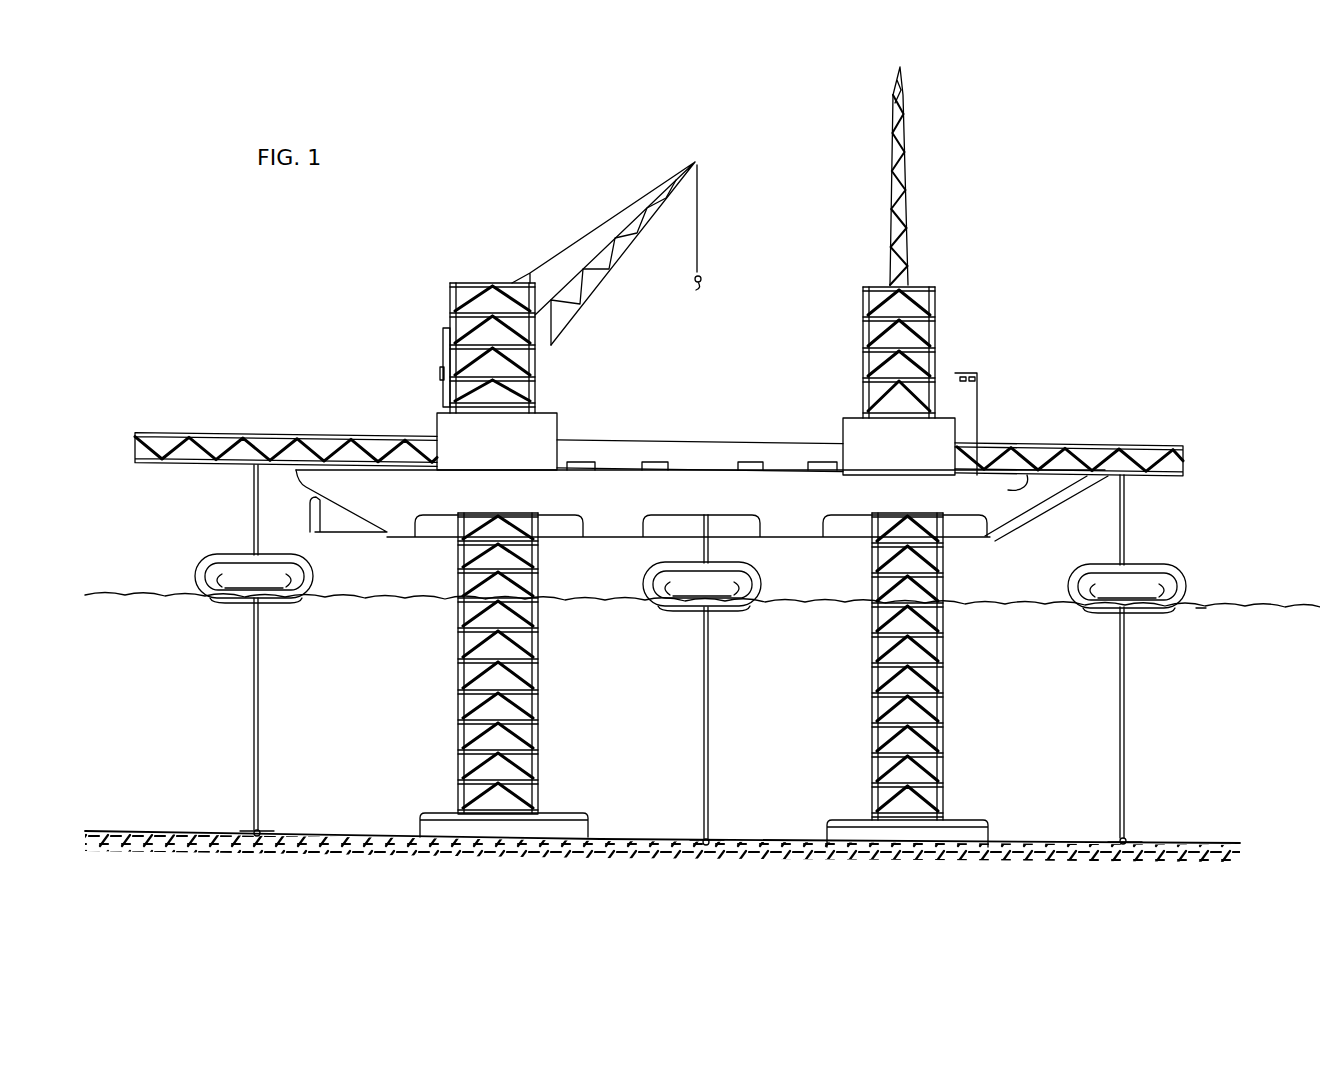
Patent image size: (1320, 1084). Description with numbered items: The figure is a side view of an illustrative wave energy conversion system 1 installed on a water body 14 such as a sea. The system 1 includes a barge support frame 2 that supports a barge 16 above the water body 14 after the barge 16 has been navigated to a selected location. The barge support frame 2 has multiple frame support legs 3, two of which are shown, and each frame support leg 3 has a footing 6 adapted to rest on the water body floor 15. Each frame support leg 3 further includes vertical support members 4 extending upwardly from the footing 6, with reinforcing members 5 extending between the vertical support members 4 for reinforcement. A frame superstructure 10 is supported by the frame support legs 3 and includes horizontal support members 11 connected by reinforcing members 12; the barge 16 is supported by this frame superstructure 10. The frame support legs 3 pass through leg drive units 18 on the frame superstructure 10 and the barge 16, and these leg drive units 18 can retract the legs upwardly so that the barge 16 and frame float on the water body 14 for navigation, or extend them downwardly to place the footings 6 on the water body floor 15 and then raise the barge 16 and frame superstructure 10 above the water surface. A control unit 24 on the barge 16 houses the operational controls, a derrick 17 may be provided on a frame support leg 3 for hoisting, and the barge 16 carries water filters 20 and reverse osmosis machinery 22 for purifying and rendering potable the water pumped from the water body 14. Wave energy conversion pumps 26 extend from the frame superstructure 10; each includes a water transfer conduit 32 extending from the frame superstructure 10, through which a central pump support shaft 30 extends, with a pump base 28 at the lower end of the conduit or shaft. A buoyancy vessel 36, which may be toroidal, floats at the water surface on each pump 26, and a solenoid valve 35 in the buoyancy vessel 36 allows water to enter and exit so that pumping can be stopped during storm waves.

The wave energy conversion system 1 is at (1082, 130).
The barge support frame 2 is at (1172, 436).
The frame support leg 3 is at (550, 700).
The vertical support member 4 is at (460, 790).
The reinforcing member 5 is at (545, 646).
The footing 6 is at (578, 810).
The frame superstructure 10 is at (1176, 482).
The horizontal support member 11 is at (1063, 472).
The reinforcing member 12 is at (1008, 486).
The water body 14 is at (968, 606).
The water body floor 15 is at (1245, 850).
The barge 16 is at (387, 505).
The derrick 17 is at (596, 288).
The leg drive unit 18 is at (447, 428).
The water filter 20 is at (746, 460).
The reverse osmosis machinery 22 is at (822, 462).
The control unit 24 is at (977, 373).
The wave energy conversion pump 26 is at (216, 528).
The pump base 28 is at (310, 835).
The central pump support shaft 30 is at (262, 832).
The water transfer conduit 32 is at (259, 510).
The solenoid valve 35 is at (275, 603).
The buoyancy vessel 36 is at (205, 557).